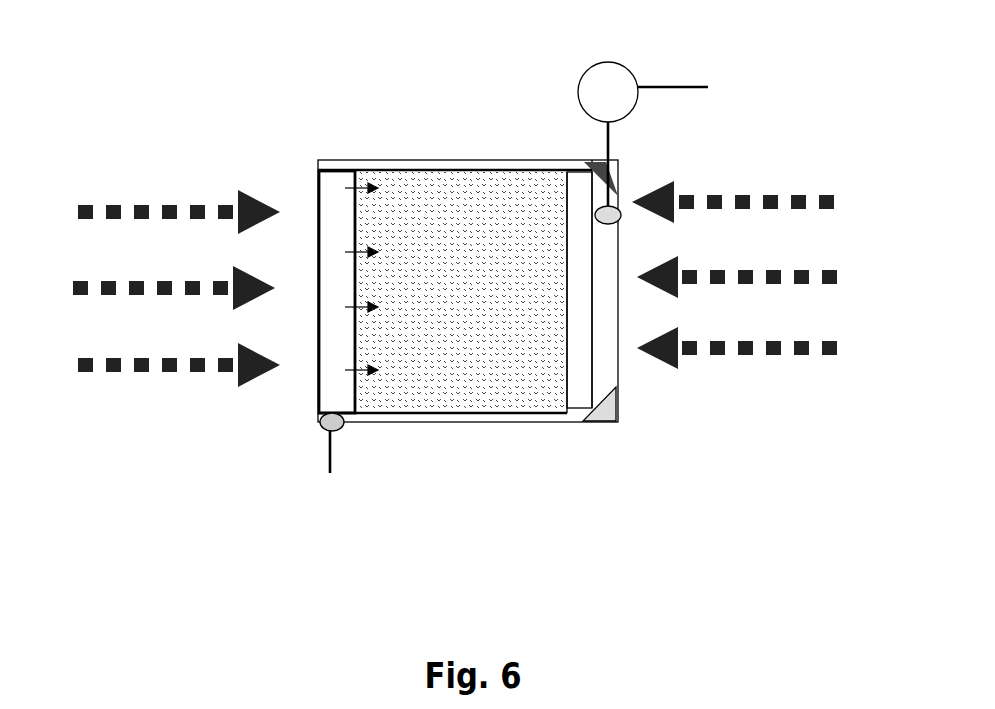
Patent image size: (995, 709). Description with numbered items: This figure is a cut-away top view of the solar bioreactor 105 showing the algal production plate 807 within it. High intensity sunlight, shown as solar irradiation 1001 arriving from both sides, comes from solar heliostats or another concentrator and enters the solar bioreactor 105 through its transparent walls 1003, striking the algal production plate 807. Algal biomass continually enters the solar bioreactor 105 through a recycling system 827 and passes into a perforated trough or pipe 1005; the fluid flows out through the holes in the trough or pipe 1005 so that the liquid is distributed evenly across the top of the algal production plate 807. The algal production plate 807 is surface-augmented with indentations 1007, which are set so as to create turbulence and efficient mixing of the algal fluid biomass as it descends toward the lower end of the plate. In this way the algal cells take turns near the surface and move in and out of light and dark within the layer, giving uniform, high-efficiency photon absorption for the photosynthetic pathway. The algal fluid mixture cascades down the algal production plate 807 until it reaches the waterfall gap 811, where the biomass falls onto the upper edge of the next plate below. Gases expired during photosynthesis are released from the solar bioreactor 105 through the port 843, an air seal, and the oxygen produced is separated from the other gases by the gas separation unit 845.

The solar bioreactor 105 is at (483, 155).
The algal production plate 807 is at (548, 410).
The waterfall gap 811 is at (577, 313).
The recycling system 827 is at (315, 458).
The port 843 is at (616, 221).
The gas separation unit 845 is at (620, 53).
The solar irradiation 1001 is at (424, 284).
The transparent walls 1003 is at (625, 188).
The perforated trough or pipe 1005 is at (333, 233).
The indentations 1007 is at (438, 212).